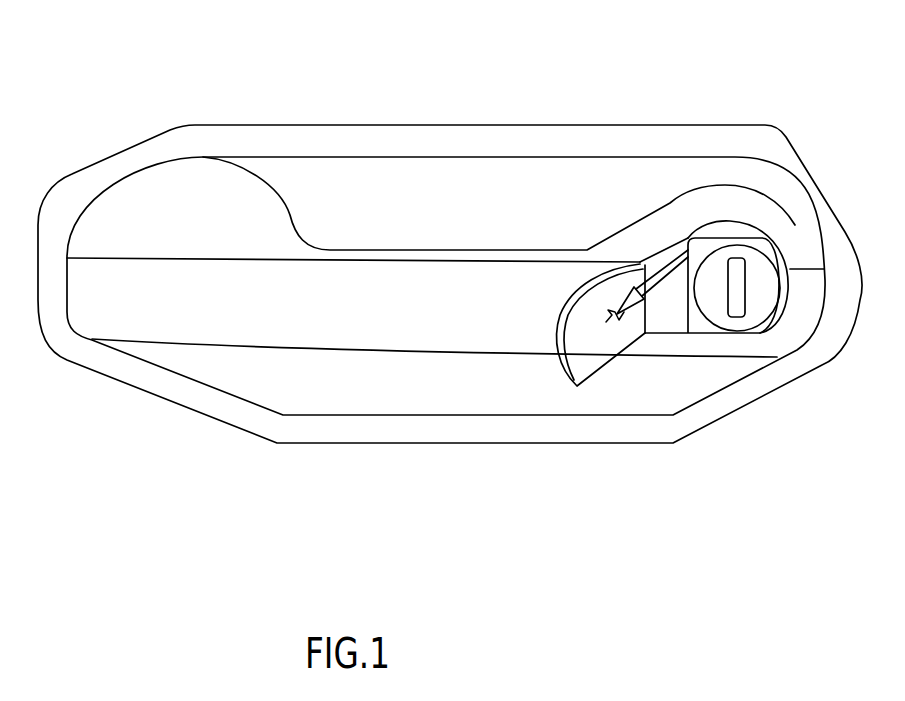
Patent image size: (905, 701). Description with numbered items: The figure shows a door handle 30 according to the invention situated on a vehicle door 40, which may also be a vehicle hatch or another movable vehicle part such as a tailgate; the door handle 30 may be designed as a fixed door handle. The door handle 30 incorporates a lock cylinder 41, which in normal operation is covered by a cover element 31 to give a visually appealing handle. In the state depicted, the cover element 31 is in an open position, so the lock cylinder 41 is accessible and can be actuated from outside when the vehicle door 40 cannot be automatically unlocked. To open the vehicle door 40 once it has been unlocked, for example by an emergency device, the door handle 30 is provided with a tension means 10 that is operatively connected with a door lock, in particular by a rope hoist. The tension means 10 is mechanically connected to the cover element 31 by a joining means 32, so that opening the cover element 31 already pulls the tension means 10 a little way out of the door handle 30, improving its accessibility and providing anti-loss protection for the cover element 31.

The vehicle door 40 is at (428, 31).
The door handle 30 is at (157, 197).
The tension means 10 is at (660, 262).
The cover element 31 is at (590, 350).
The joining means 32 is at (617, 323).
The lock cylinder 41 is at (757, 300).